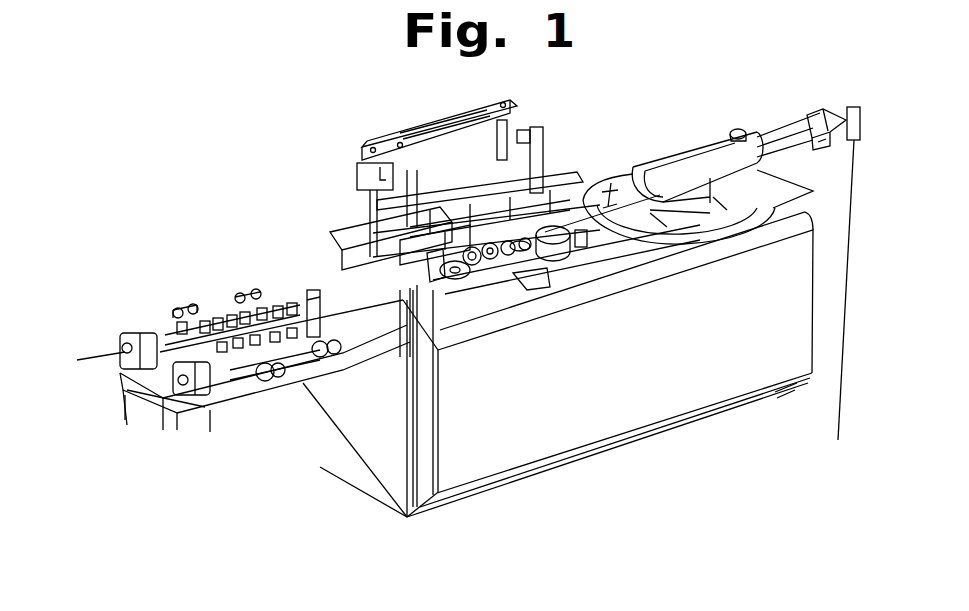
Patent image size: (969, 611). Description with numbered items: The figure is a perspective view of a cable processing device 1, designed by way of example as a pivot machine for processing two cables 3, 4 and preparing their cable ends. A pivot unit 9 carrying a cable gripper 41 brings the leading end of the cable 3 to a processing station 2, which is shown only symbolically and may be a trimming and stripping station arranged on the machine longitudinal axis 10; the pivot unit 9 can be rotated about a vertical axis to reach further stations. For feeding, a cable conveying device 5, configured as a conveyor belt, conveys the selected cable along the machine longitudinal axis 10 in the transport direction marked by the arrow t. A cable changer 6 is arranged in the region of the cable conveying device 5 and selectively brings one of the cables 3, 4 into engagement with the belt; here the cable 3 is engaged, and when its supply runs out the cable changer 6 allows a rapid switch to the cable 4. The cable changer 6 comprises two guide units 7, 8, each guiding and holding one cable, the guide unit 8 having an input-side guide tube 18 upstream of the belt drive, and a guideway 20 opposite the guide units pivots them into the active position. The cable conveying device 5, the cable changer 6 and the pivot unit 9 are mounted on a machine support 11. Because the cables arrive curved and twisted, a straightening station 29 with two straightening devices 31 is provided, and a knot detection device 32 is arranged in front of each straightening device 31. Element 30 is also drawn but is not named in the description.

The cable processing device 1 is at (228, 102).
The processing station 2 is at (857, 107).
The cable 3 is at (97, 355).
The cable 4 is at (150, 387).
The cable conveying device 5 is at (477, 295).
The cable changer 6 is at (399, 120).
The guide unit 7 is at (413, 253).
The guide unit 8 is at (583, 203).
The pivot unit 9 is at (689, 145).
The machine longitudinal axis 10 is at (778, 182).
The machine support 11 is at (520, 368).
The guide tube 18 is at (415, 243).
The guideway 20 is at (433, 280).
The straightening station 29 is at (224, 288).
The bracket 30 is at (340, 290).
The straightening device 31 is at (240, 360).
The knot detection device 32 is at (122, 385).
The cable gripper 41 is at (830, 100).